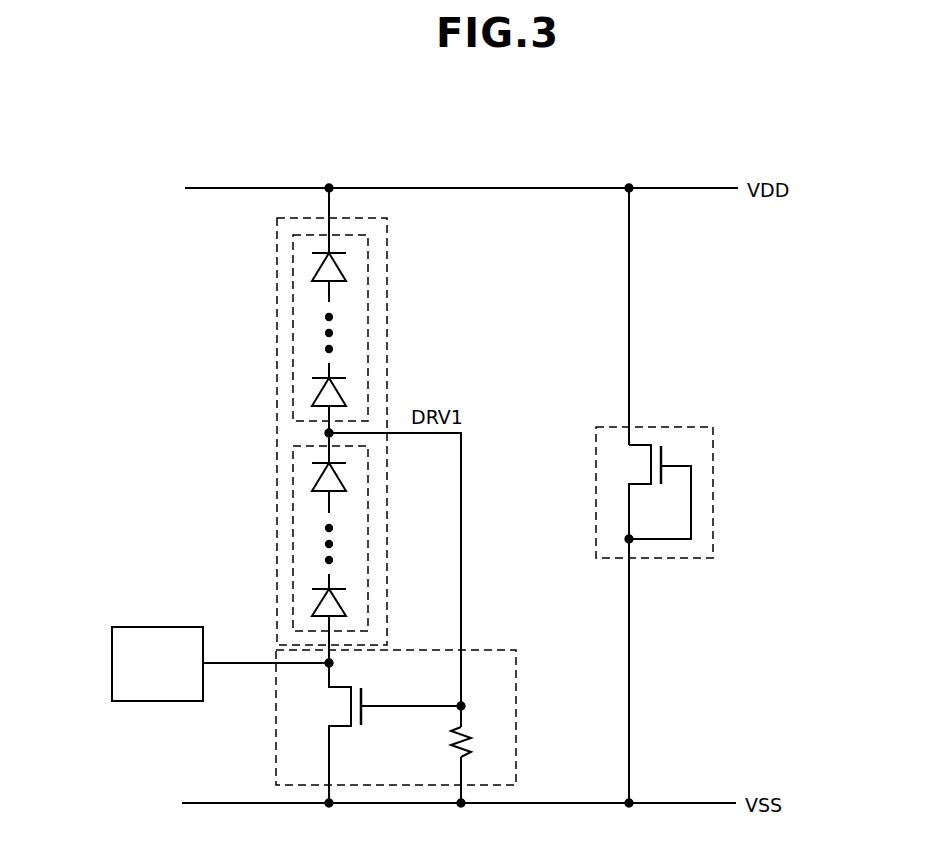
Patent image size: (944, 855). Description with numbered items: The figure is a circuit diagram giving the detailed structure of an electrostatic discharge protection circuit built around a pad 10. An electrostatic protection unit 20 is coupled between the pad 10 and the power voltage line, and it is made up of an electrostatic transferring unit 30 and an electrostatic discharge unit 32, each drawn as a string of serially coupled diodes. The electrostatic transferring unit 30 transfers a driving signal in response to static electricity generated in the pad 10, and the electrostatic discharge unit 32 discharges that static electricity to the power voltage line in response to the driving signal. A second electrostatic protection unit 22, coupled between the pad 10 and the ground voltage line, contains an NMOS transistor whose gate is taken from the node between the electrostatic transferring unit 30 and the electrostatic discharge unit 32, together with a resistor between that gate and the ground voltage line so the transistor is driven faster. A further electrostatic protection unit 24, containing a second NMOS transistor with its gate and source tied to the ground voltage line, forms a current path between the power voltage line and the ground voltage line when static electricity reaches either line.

The pad 10 is at (112, 664).
The electrostatic protection unit 20 is at (298, 425).
The electrostatic protection unit 22 is at (276, 739).
The electrostatic protection unit 24 is at (713, 478).
The electrostatic transferring unit 30 is at (293, 535).
The electrostatic discharge unit 32 is at (293, 324).